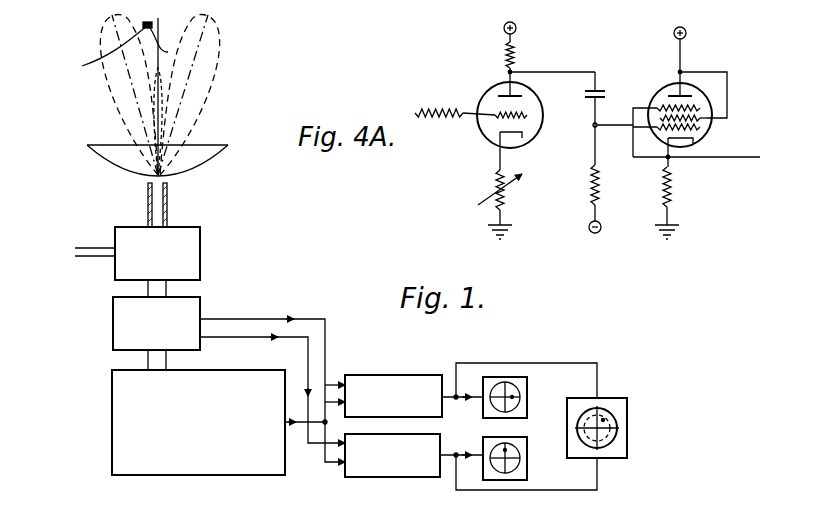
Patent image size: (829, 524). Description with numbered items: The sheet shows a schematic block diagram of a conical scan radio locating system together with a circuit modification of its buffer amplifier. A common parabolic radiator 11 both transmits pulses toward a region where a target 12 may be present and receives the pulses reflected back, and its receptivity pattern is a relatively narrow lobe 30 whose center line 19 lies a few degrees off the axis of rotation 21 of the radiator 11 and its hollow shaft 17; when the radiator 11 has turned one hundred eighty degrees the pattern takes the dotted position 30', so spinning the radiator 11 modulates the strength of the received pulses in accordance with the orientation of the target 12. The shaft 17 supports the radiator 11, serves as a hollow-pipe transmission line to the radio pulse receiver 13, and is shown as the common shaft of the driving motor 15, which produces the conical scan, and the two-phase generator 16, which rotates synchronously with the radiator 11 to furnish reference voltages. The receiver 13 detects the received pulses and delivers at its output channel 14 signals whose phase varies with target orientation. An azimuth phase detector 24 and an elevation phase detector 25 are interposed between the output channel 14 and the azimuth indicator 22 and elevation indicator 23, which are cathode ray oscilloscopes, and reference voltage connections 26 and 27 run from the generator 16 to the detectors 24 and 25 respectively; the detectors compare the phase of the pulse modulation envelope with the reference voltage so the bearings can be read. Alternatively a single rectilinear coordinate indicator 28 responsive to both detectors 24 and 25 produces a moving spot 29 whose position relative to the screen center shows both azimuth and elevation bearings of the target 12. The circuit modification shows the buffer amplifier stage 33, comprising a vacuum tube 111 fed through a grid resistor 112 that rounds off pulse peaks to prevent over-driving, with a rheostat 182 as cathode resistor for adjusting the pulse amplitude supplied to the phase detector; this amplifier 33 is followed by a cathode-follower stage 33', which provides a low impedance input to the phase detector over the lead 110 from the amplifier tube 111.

In FIG. 1, the radiator 11 is at (220, 157).
In FIG. 1, the target 12 is at (87, 52).
In FIG. 1, the radio pulse receiver 13 is at (224, 467).
In FIG. 1, the output channel 14 is at (298, 425).
In FIG. 1, the driving motor 15 is at (202, 259).
In FIG. 1, the two-phase generator 16 is at (200, 308).
In FIG. 1, the hollow shaft 17 is at (147, 204).
In FIG. 1, the center line 19 is at (140, 115).
In FIG. 1, the axis of rotation 21 is at (168, 52).
In FIG. 1, the azimuth indicator 22 is at (513, 377).
In FIG. 1, the elevation indicator 23 is at (527, 462).
In FIG. 1, the azimuth phase detector 24 is at (387, 375).
In FIG. 1, the elevation phase detector 25 is at (386, 478).
In FIG. 1, the reference voltage connection 26 is at (325, 318).
In FIG. 1, the reference voltage connection 27 is at (250, 337).
In FIG. 1, the rectilinear coordinate indicator 28 is at (620, 455).
In FIG. 1, the moving spot 29 is at (606, 421).
In FIG. 1, the receptivity pattern lobe 30 is at (210, 95).
In FIG. 1, the receptivity pattern 30' is at (112, 95).
In FIG. 4A, the buffer amplifier stage 33 is at (529, 85).
In FIG. 4A, the cathode-follower stage 33' is at (678, 133).
In FIG. 4A, the input lead 110 is at (730, 159).
In FIG. 4A, the vacuum tube 111 is at (536, 136).
In FIG. 4A, the grid resistor 112 is at (437, 110).
In FIG. 4A, the rheostat 182 is at (495, 180).